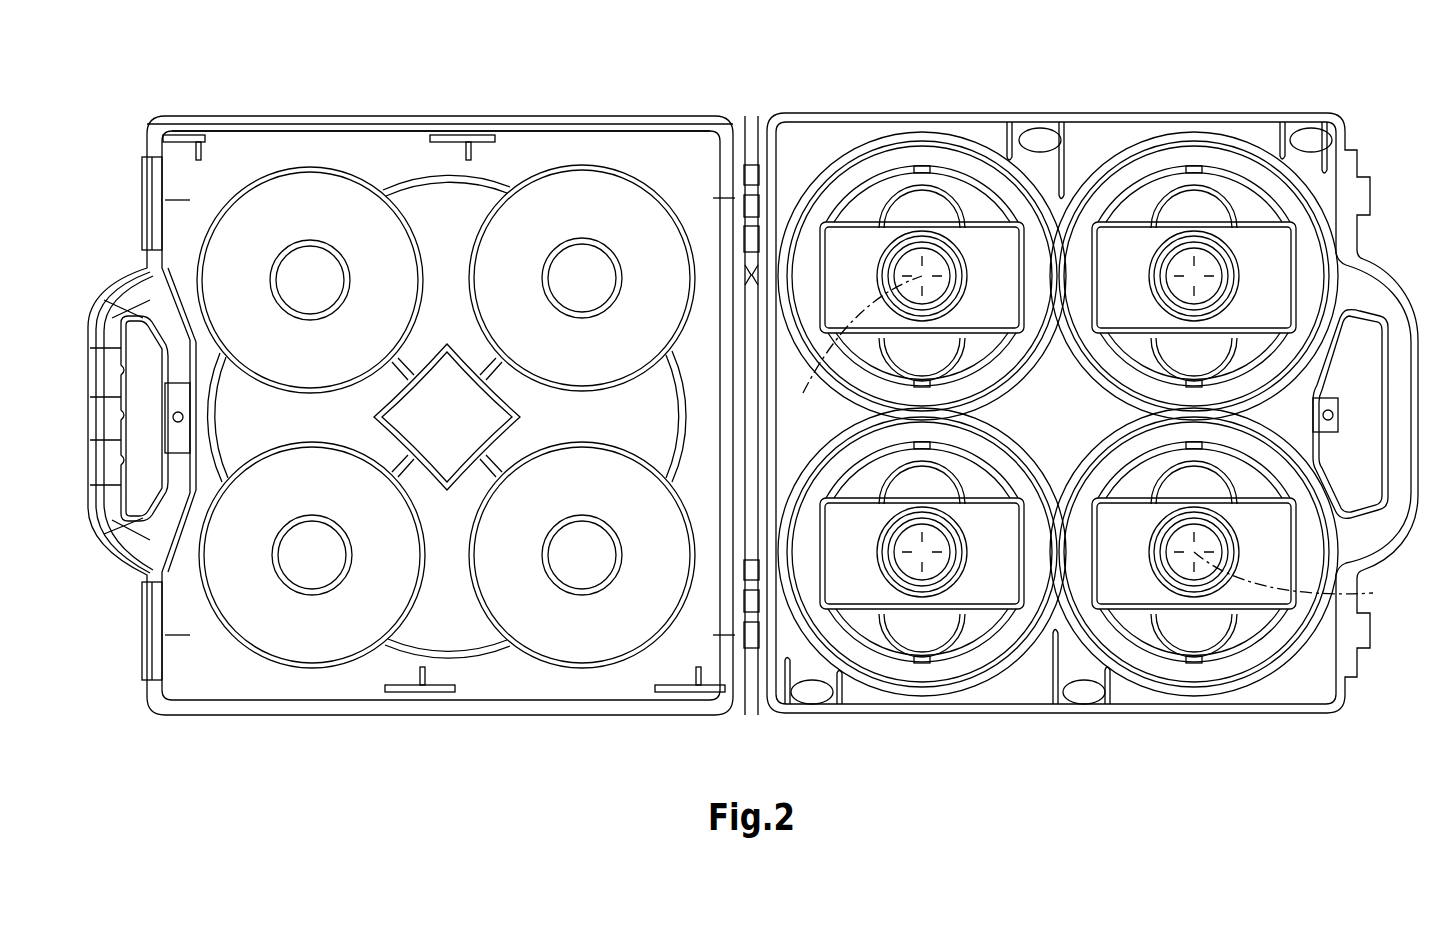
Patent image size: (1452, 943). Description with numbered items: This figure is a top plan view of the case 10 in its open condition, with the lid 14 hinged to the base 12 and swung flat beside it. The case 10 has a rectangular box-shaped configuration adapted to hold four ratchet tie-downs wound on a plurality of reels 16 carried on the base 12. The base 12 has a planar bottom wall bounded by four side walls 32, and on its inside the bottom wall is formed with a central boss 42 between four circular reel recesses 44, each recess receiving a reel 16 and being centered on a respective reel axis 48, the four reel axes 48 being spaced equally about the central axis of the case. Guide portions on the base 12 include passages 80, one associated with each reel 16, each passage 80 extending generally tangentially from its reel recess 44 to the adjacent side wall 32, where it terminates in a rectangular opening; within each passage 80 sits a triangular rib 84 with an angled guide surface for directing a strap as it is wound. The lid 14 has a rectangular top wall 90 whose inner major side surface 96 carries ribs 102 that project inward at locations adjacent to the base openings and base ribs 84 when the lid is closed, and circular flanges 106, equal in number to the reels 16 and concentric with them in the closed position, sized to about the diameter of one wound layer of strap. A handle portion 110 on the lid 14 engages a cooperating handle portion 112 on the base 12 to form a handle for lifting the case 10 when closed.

The case 10 is at (598, 785).
The base 12 is at (950, 770).
The lid 14 is at (484, 742).
The reel 16 is at (960, 165).
The side wall 32 is at (820, 112).
The central boss 42 is at (1057, 412).
The reel recess 44 is at (912, 150).
The reel axis 48 is at (815, 375).
The passage 80 is at (800, 655).
The triangular rib 84 is at (1040, 130).
The top wall 90 is at (245, 155).
The inner major side surface 96 is at (275, 150).
The rib 102 is at (185, 130).
The circular flange 106 is at (365, 180).
The handle portion 110 is at (115, 300).
The handle portion 112 is at (1388, 278).